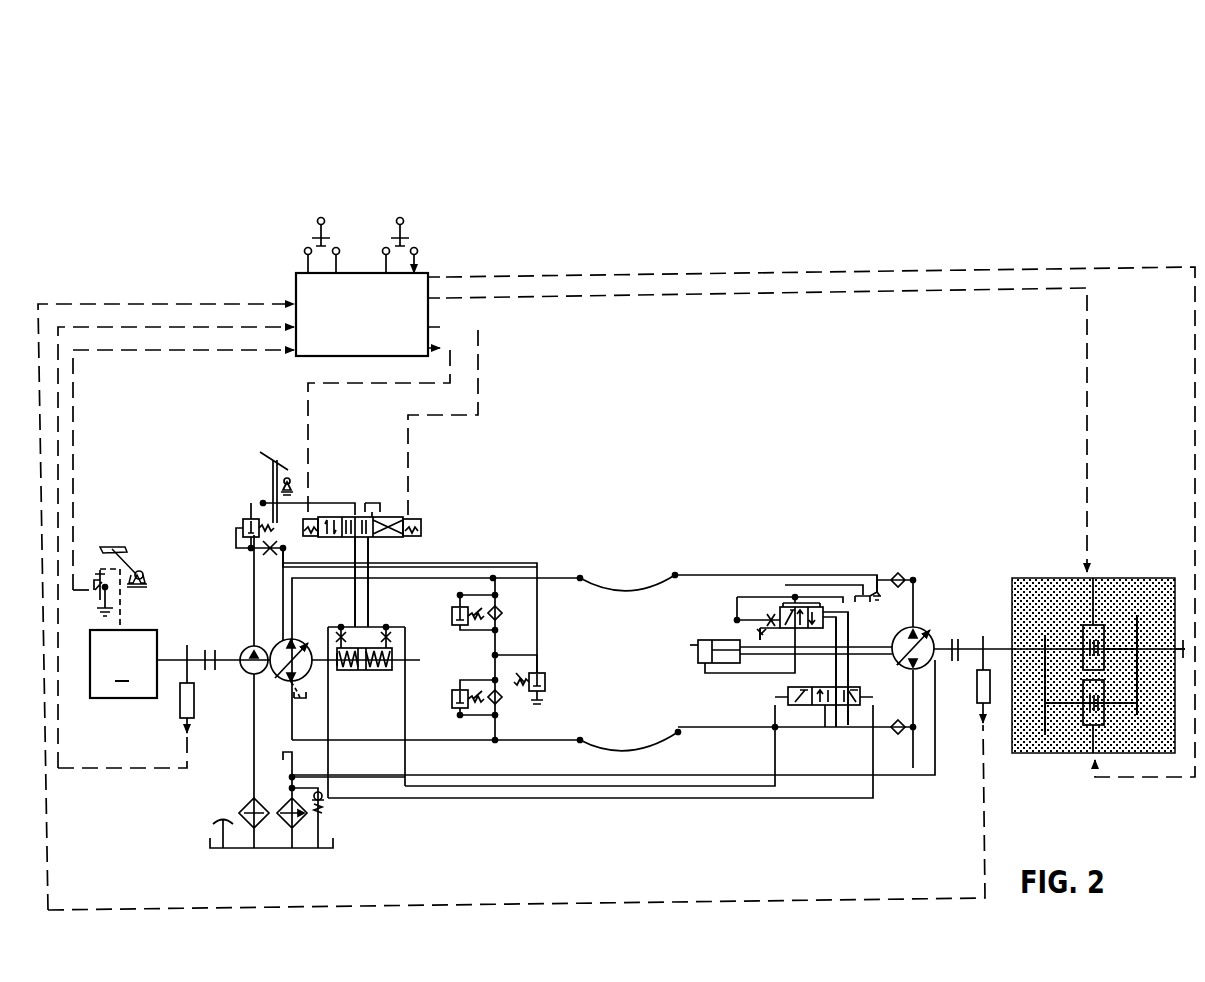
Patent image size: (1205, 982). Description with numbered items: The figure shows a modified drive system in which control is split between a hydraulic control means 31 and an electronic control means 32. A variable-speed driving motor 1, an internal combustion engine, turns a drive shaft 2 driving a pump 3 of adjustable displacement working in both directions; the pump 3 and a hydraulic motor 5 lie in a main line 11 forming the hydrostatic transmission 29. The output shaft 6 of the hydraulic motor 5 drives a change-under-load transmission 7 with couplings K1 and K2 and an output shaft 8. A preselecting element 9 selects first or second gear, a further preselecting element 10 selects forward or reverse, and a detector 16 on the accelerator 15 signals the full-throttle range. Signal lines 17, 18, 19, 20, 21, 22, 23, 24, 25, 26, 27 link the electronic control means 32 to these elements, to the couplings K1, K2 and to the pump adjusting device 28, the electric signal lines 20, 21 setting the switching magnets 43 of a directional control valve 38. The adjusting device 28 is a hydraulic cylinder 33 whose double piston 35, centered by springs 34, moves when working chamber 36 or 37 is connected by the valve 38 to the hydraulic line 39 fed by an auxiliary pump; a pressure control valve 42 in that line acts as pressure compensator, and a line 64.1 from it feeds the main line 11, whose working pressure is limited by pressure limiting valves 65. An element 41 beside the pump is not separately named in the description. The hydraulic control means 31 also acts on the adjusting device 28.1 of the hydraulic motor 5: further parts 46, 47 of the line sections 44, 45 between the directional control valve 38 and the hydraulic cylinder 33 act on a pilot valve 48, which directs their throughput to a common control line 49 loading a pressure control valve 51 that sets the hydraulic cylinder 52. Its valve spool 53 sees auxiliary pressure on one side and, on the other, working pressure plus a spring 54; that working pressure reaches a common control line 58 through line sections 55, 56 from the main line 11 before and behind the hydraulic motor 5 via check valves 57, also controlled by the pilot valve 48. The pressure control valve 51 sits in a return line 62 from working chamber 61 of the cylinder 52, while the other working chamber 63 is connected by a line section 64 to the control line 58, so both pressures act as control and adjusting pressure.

The driving motor 1 is at (123, 664).
The drive shaft 2 is at (172, 657).
The pump 3 is at (282, 639).
The hydraulic motor 5 is at (934, 630).
The output shaft 6 is at (936, 655).
The change-under-load transmission 7 is at (1106, 669).
The output shaft 8 is at (1180, 645).
The preselecting element 9 is at (318, 230).
The preselecting element 10 is at (404, 230).
The main line 11 is at (716, 572).
The accelerator 15 is at (126, 555).
The detector 16 is at (100, 590).
The signal line 17 is at (162, 302).
The signal line 18 is at (200, 324).
The signal line 19 is at (160, 354).
The signal line 20 is at (456, 380).
The signal line 21 is at (482, 412).
The signal line 22 is at (710, 297).
The signal line 23 is at (680, 272).
The signal line 24 is at (419, 267).
The signal line 25 is at (383, 266).
The signal line 26 is at (339, 260).
The signal line 27 is at (305, 268).
The adjusting device 28 is at (370, 706).
The adjusting device 28.1 is at (752, 664).
The hydrostatic transmission 29 is at (400, 806).
The hydraulic control means 31 is at (327, 529).
The electronic control means 32 is at (375, 331).
The hydraulic cylinder 33 is at (366, 712).
The springs 34 is at (386, 670).
The double piston 35 is at (361, 673).
The working chamber 36 is at (340, 665).
The working chamber 37 is at (392, 650).
The directional control valve 38 is at (362, 512).
The hydraulic line 39 is at (325, 505).
The charge pump 41 is at (249, 673).
The pressure control valve 42 is at (241, 522).
The switching magnets 43 is at (306, 512).
The line section 44 is at (352, 602).
The line section 45 is at (372, 602).
The line part 46 is at (495, 800).
The line part 47 is at (555, 788).
The pilot valve 48 is at (818, 707).
The common control line 49 is at (834, 672).
The pressure control valve 51 is at (810, 620).
The hydraulic cylinder 52 is at (771, 671).
The valve spool 53 is at (795, 630).
The spring 54 is at (773, 636).
The line section 55 is at (877, 590).
The line section 56 is at (878, 737).
The check valves 57 is at (899, 572).
The common control line 58 is at (851, 672).
The working chamber 61 is at (697, 653).
The return line 62 is at (800, 624).
The working chamber 63 is at (734, 664).
The line section 64 is at (735, 620).
The line 64.1 is at (508, 561).
The pressure limiting valves 65 is at (452, 633).
The coupling K1 is at (1077, 744).
The coupling K2 is at (1100, 620).